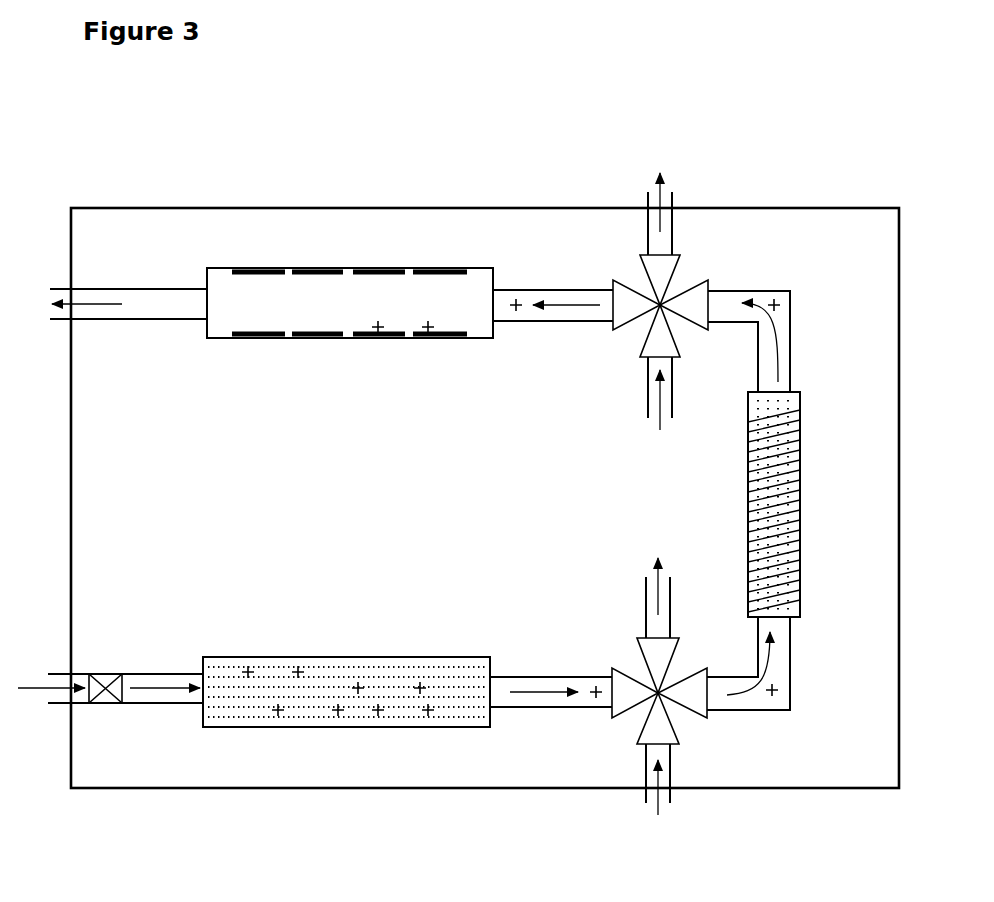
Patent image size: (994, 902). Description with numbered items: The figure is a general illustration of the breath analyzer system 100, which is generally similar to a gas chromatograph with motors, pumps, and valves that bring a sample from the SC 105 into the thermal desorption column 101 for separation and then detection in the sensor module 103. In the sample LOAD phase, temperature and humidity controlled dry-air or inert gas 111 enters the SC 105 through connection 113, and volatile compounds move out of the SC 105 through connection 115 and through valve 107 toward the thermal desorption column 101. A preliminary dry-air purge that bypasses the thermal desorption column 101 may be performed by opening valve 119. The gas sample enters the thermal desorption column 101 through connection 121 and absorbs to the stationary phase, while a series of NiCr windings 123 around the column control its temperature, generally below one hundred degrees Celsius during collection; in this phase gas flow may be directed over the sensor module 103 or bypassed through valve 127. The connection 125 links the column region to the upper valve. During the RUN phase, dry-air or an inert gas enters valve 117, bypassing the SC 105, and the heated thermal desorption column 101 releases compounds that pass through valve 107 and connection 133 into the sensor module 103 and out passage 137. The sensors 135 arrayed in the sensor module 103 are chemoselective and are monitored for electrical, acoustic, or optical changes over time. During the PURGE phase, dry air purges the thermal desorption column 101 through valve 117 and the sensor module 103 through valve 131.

The breath analyzer system 100 is at (249, 202).
The thermal desorption column 101 is at (817, 504).
The sensor module 103 is at (358, 325).
The SC 105 is at (360, 645).
The valve 107 is at (636, 348).
The dry-air or inert gas 111 is at (104, 664).
The connection 113 is at (175, 667).
The connection 115 is at (499, 655).
The valve 117 is at (660, 793).
The valve 119 is at (660, 580).
The connection 121 is at (796, 632).
The NiCr windings 123 is at (810, 520).
The conduit 125 is at (797, 380).
The valve 127 is at (660, 199).
The valve 131 is at (660, 407).
The connection 133 is at (516, 284).
The sensors 135 is at (262, 266).
The passage 137 is at (136, 287).